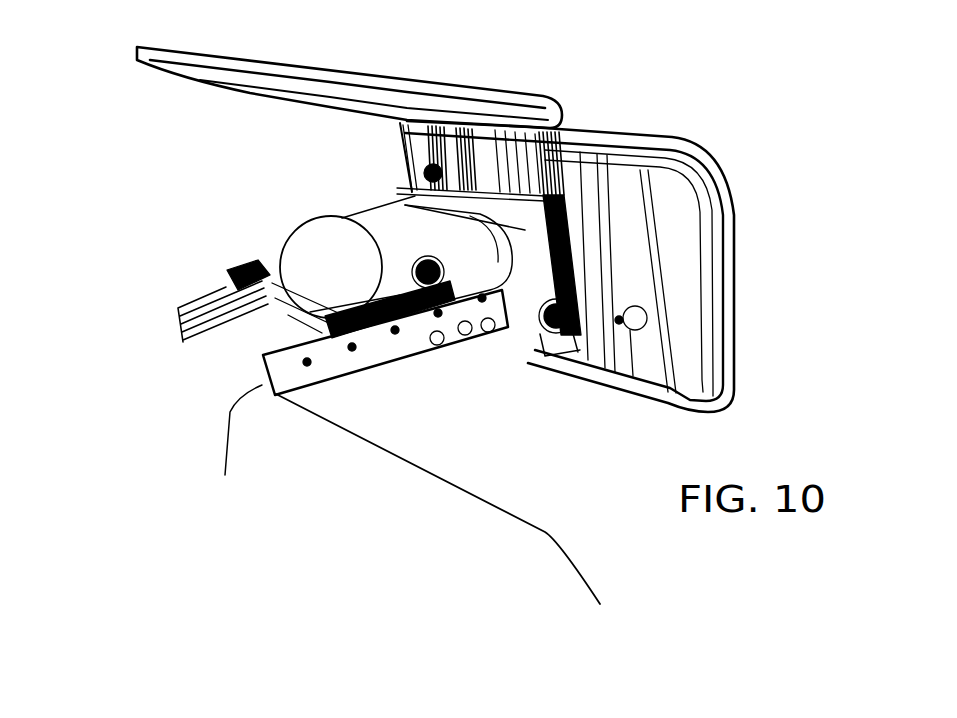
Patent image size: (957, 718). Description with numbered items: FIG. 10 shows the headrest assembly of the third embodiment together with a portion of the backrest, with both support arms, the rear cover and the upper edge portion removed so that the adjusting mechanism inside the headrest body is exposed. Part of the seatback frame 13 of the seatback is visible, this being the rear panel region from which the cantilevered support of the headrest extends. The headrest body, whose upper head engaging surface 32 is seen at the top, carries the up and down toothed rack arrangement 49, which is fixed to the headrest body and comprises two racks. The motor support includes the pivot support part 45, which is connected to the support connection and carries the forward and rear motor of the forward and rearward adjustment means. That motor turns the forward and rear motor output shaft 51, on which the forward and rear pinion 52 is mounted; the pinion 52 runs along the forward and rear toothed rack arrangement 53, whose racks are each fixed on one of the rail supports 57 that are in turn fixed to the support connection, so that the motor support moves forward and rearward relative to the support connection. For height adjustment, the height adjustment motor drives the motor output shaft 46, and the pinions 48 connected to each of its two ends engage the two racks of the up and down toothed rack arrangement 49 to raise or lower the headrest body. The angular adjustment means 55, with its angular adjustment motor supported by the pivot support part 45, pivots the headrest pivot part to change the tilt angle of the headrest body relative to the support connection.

The seatback frame 13 is at (556, 588).
The upper head engaging surface 32 is at (407, 80).
The pivot support part 45 is at (405, 206).
The motor output shaft 46 is at (540, 337).
The pinions 48 is at (565, 332).
The up and down toothed rack arrangement 49 is at (570, 238).
The forward and rear motor output shaft 51 is at (427, 268).
The forward and rear pinion 52 is at (410, 287).
The forward and rear toothed rack arrangement 53 is at (230, 275).
The angular adjustment means 55 is at (466, 244).
The rail supports 57 is at (203, 347).